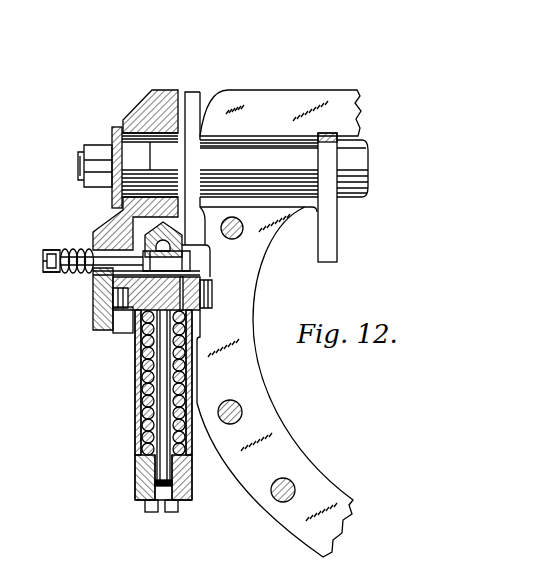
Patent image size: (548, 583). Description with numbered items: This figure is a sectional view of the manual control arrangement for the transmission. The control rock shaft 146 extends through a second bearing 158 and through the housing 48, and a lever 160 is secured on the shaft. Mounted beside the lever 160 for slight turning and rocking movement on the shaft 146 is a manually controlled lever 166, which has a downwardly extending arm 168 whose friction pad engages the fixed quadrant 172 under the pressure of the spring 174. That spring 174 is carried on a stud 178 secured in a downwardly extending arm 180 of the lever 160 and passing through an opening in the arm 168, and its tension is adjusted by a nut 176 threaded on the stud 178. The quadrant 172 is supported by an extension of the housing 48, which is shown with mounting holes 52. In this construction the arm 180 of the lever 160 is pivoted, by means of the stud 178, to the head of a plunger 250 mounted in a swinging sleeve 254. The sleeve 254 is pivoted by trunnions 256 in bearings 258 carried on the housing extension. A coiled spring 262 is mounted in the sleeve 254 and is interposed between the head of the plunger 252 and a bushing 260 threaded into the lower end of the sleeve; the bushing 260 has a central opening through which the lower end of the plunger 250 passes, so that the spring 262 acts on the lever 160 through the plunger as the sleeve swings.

The housing 48 is at (240, 302).
The mounting holes 52 is at (240, 413).
The control rock shaft 146 is at (357, 210).
The second bearing 158 is at (252, 138).
The lever 160 is at (195, 103).
The manually controlled lever 166 is at (132, 123).
The downwardly extending arm 168 is at (123, 220).
The fixed quadrant 172 is at (112, 333).
The spring 174 is at (62, 248).
The nut 176 is at (50, 250).
The stud 178 is at (47, 262).
The downwardly extending arm 180 is at (188, 245).
The plunger 250 is at (188, 254).
The head of the plunger 252 is at (195, 273).
The swinging sleeve 254 is at (140, 378).
The trunnions 256 is at (118, 289).
The bearings 258 is at (97, 308).
The bushing 260 is at (137, 465).
The coiled spring 262 is at (140, 390).